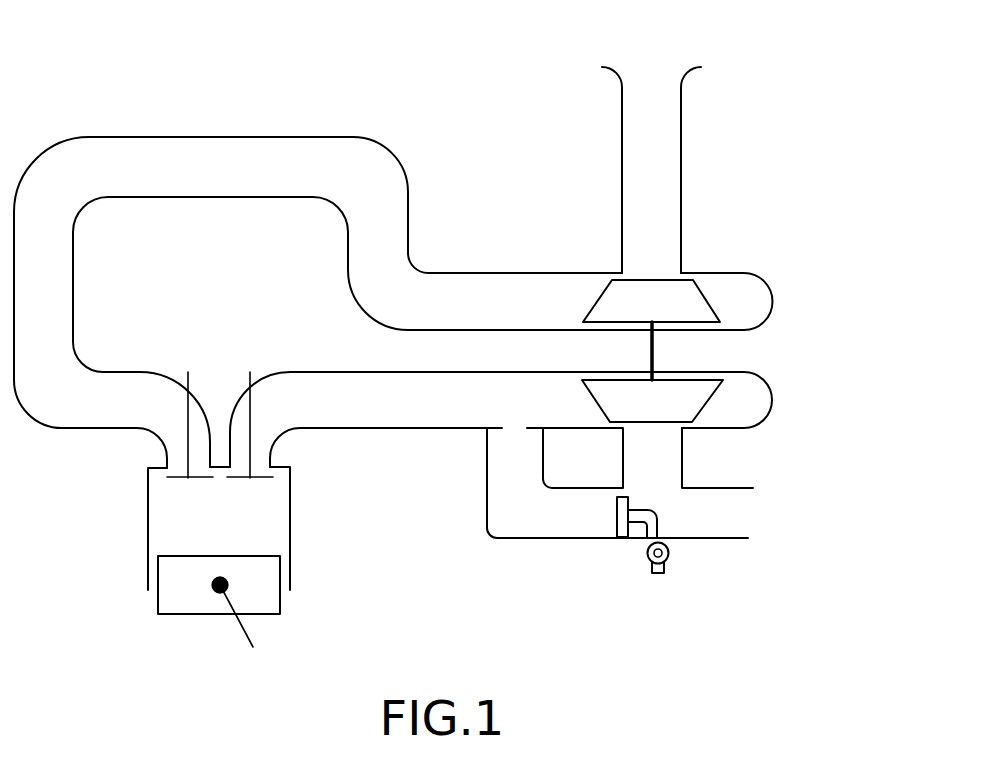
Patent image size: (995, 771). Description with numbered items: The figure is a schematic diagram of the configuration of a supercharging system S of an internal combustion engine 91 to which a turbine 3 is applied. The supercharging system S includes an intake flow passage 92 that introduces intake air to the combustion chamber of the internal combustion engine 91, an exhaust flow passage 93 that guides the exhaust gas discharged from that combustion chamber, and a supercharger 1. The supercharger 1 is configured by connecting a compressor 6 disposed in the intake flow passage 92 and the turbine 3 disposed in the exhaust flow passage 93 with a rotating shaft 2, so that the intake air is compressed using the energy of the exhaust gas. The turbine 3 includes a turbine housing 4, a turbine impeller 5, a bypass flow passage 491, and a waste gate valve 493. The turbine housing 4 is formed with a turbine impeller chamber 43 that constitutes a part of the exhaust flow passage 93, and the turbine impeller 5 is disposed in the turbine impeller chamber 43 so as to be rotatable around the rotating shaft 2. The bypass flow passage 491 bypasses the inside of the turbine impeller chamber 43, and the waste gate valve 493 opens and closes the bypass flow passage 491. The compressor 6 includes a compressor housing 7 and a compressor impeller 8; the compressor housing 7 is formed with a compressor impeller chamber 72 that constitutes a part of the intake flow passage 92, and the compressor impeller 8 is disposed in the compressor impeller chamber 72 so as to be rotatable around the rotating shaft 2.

The supercharging system S is at (89, 41).
The supercharger 1 is at (830, 184).
The rotating shaft 2 is at (655, 350).
The turbine 3 is at (754, 451).
The turbine housing 4 is at (773, 398).
The turbine impeller 5 is at (688, 412).
The compressor 6 is at (740, 242).
The compressor housing 7 is at (770, 282).
The compressor impeller 8 is at (688, 290).
The turbine impeller chamber 43 is at (562, 383).
The compressor impeller chamber 72 is at (572, 285).
The internal combustion engine 91 is at (247, 333).
The intake flow passage 92 is at (681, 122).
The exhaust flow passage 93 is at (373, 430).
The bypass flow passage 491 is at (523, 542).
The waste gate valve 493 is at (660, 575).